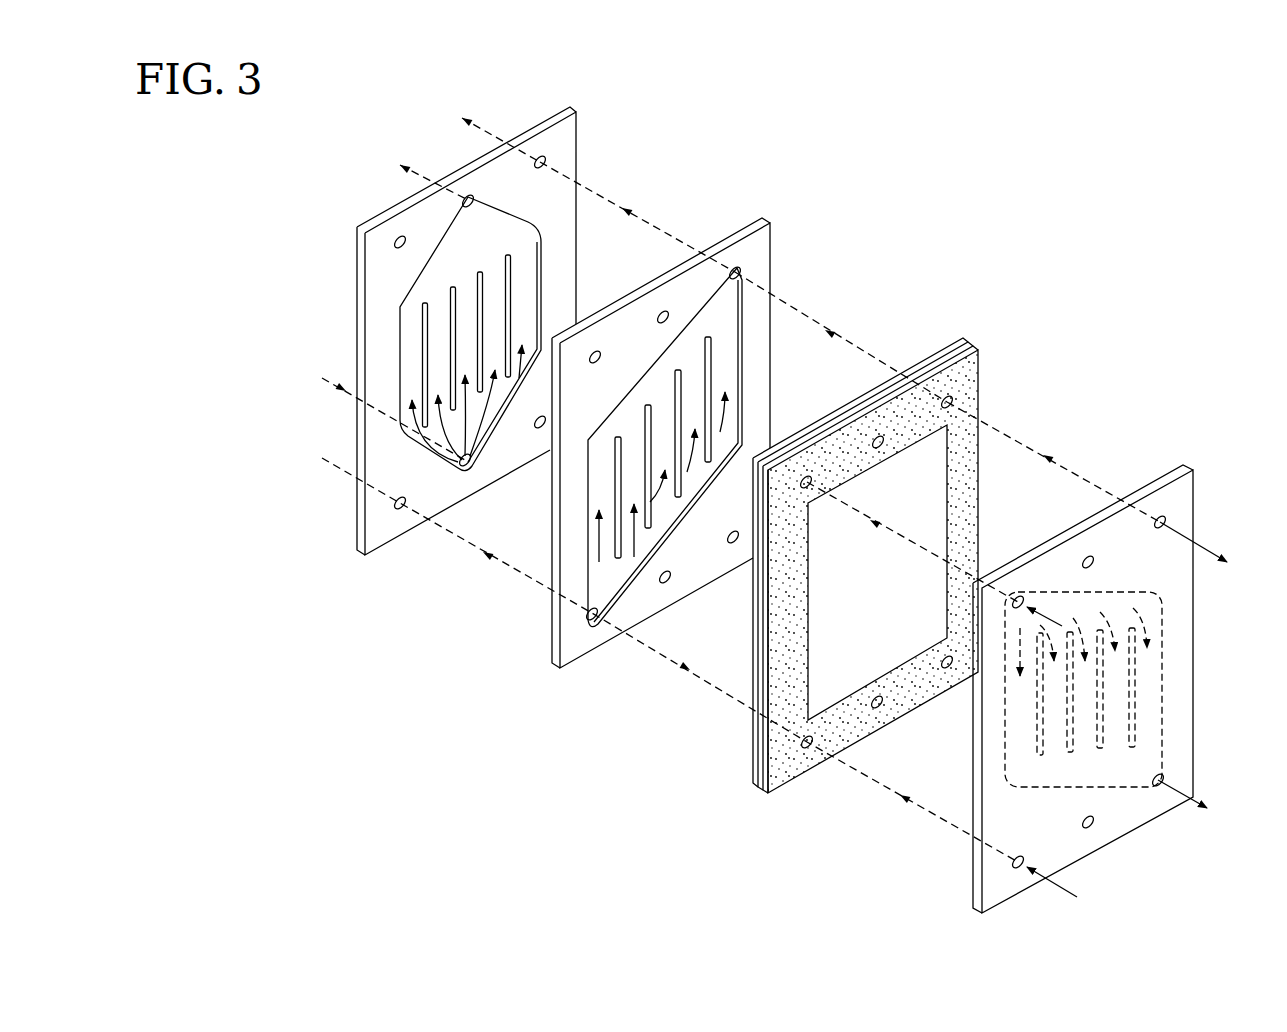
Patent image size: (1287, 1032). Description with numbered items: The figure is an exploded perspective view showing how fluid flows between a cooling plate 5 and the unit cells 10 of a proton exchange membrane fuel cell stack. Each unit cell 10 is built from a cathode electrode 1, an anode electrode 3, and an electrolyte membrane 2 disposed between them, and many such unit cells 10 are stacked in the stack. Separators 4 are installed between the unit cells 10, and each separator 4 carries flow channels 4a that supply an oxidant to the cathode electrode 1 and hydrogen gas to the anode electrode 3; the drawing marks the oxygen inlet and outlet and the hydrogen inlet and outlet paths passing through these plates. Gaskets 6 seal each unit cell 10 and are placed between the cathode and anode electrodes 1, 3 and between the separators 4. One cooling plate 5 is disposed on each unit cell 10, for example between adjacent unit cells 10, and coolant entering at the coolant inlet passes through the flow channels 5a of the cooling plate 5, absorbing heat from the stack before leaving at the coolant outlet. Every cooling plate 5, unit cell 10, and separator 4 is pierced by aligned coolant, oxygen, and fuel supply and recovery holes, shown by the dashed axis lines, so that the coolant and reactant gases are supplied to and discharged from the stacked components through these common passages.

The unit cell 10 is at (998, 338).
The cathode electrode 1 is at (892, 650).
The electrolyte membrane 2 is at (761, 789).
The anode electrode 3 is at (752, 673).
The gasket 6 is at (752, 768).
The separator 4 is at (549, 671).
The flow channel 4a is at (611, 578).
The cooling plate 5 is at (347, 564).
The flow channel 5a is at (403, 318).